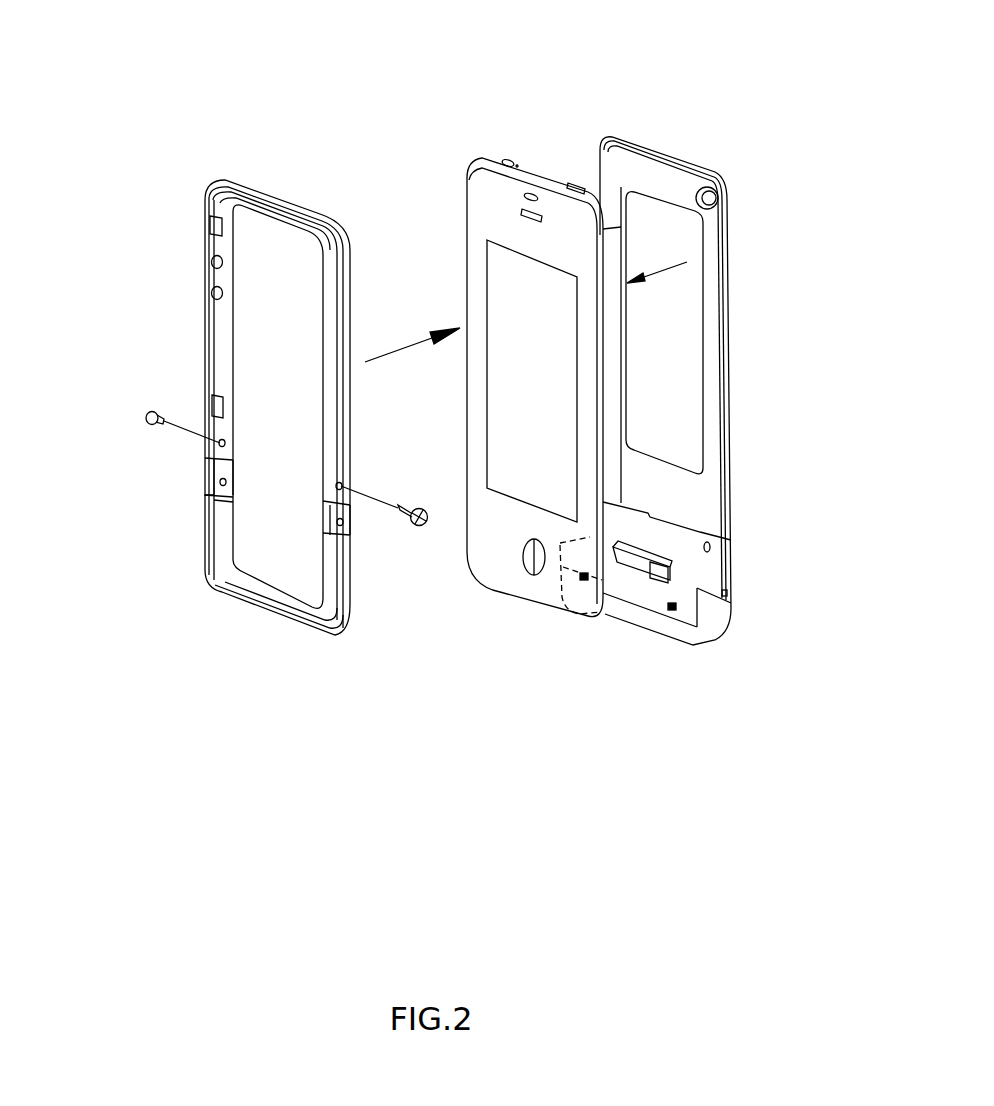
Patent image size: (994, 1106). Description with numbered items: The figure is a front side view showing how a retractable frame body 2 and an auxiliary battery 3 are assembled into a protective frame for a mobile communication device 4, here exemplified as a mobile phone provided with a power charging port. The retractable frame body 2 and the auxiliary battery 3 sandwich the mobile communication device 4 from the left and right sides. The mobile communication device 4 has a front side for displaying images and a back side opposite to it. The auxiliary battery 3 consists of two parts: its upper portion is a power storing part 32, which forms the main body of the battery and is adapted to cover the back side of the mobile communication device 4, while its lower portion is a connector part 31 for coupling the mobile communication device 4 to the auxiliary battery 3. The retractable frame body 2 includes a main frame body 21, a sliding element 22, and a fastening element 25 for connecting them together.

The retractable frame body 2 is at (298, 140).
The main frame body 21 is at (212, 232).
The sliding element 22 is at (215, 585).
The fastening element 25 is at (150, 410).
The mobile communication device 4 is at (548, 128).
The auxiliary battery 3 is at (690, 115).
The connector part 31 is at (717, 630).
The power storing part 32 is at (678, 312).